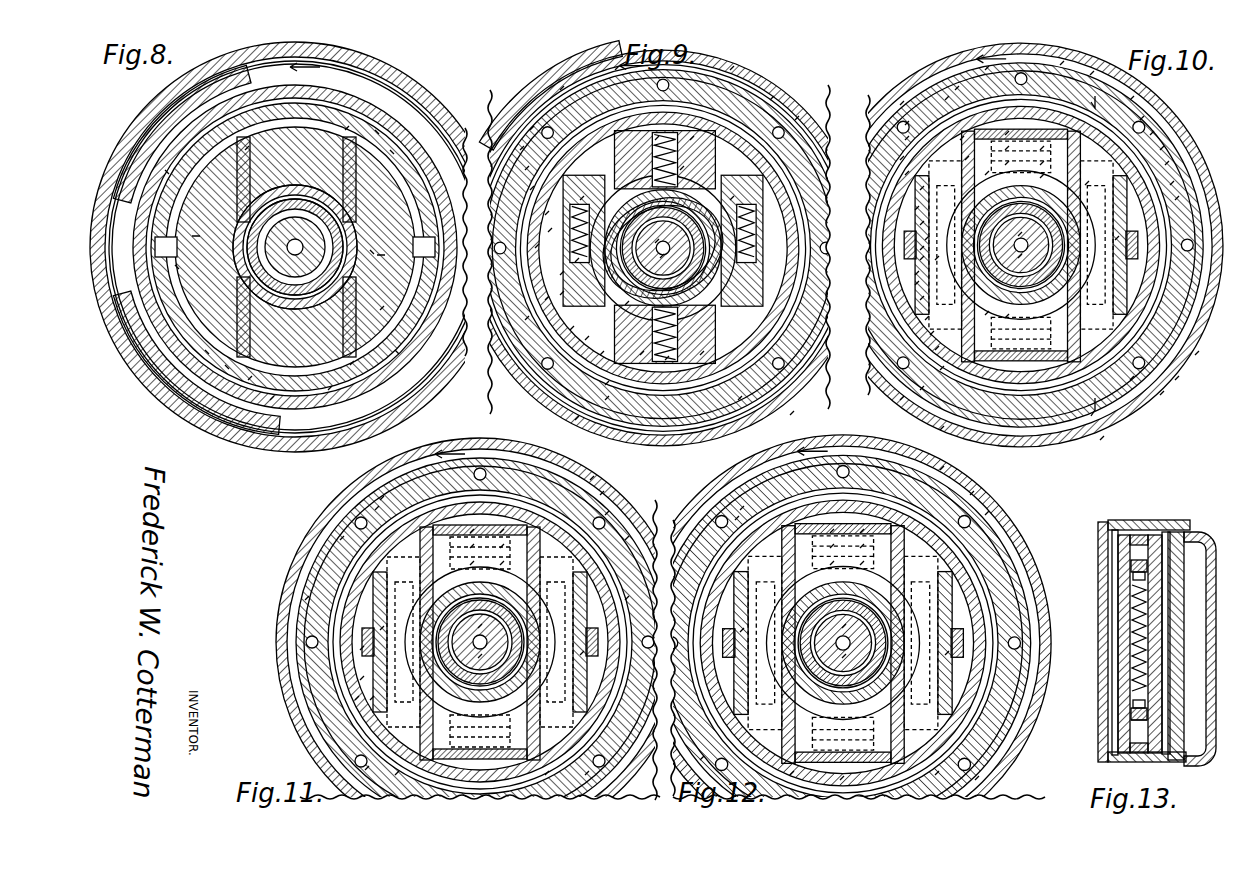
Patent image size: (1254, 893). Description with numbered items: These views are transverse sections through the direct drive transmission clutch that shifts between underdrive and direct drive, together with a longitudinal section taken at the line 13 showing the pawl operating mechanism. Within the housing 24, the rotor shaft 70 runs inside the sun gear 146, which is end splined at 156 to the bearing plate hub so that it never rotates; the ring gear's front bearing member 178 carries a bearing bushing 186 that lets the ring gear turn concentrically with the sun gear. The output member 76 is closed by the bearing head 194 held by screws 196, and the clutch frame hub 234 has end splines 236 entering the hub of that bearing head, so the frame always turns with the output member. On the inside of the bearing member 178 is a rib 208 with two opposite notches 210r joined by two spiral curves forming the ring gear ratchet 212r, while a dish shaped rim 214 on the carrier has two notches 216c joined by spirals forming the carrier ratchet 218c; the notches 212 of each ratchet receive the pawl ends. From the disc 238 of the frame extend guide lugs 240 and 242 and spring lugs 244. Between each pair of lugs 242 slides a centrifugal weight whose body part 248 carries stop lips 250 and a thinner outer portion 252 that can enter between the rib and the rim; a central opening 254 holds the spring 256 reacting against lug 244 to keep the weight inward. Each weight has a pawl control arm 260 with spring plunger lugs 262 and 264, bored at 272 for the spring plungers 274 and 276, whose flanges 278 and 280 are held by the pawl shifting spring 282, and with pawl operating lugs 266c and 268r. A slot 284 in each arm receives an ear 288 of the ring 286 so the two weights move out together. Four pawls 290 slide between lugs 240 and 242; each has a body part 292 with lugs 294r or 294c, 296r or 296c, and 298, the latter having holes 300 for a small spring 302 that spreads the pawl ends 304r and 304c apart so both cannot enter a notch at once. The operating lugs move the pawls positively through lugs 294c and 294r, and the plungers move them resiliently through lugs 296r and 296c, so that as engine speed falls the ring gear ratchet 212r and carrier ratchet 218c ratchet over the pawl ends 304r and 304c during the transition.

In FIG. 10, the section line 13 is at (1102, 254).
In FIG. 8, the housing 24 is at (295, 247).
In FIG. 9, the housing 24 is at (560, 90).
In FIG. 10, the housing 24 is at (985, 70).
In FIG. 8, the rotor shaft 70 is at (295, 247).
In FIG. 9, the rotor shaft 70 is at (664, 234).
In FIG. 10, the output member 76 is at (1090, 75).
In FIG. 10, the sun gear 146 is at (1031, 227).
In FIG. 8, the end splines 156 is at (295, 247).
In FIG. 8, the front bearing member 178 is at (270, 400).
In FIG. 9, the front bearing member 178 is at (730, 70).
In FIG. 10, the front bearing member 178 is at (1130, 100).
In FIG. 13, the front bearing member 178 is at (1103, 522).
In FIG. 8, the bearing bushing 186 is at (250, 165).
In FIG. 8, the bearing head 194 is at (295, 247).
In FIG. 9, the bearing head 194 is at (615, 70).
In FIG. 9, the screws 196 is at (530, 130).
In FIG. 10, the screws 196 is at (1060, 65).
In FIG. 8, the rib 208 is at (328, 390).
In FIG. 9, the rib 208 is at (555, 95).
In FIG. 8, the notches 210r is at (375, 130).
In FIG. 9, the notches 210r is at (770, 100).
In FIG. 10, the notches 210r is at (1140, 120).
In FIG. 11, the notches 210r is at (600, 495).
In FIG. 12, the notches 210r is at (985, 515).
In FIG. 13, the notches 210r is at (1115, 540).
In FIG. 8, the slot 212 is at (200, 236).
In FIG. 9, the ring gear ratchet 212r is at (535, 248).
In FIG. 10, the ring gear ratchet 212r is at (905, 140).
In FIG. 11, the ring gear ratchet 212r is at (340, 540).
In FIG. 12, the ring gear ratchet 212r is at (700, 760).
In FIG. 10, the dish shaped rim 214 is at (955, 90).
In FIG. 13, the dish shaped rim 214 is at (1176, 745).
In FIG. 10, the notches 216c is at (960, 140).
In FIG. 11, the notches 216c is at (375, 510).
In FIG. 12, the notches 216c is at (740, 510).
In FIG. 13, the notches 216c is at (1190, 758).
In FIG. 10, the carrier ratchet 218c is at (1160, 150).
In FIG. 11, the carrier ratchet 218c is at (370, 700).
In FIG. 10, the hub 234 is at (1030, 262).
In FIG. 8, the end splines 236 is at (335, 170).
In FIG. 13, the disc 238 is at (1168, 550).
In FIG. 8, the guide lugs 240 is at (290, 247).
In FIG. 9, the guide lugs 240 is at (525, 320).
In FIG. 10, the guide lugs 240 is at (915, 210).
In FIG. 8, the guide lugs 242 is at (245, 150).
In FIG. 9, the guide lugs 242 is at (795, 120).
In FIG. 10, the guide lugs 242 is at (997, 146).
In FIG. 11, the guide lugs 242 is at (590, 480).
In FIG. 9, the spring lugs 244 is at (655, 140).
In FIG. 10, the spring lugs 244 is at (997, 132).
In FIG. 8, the body part 248 is at (283, 330).
In FIG. 9, the body part 248 is at (640, 355).
In FIG. 8, the lips 250 is at (318, 330).
In FIG. 9, the lips 250 is at (700, 355).
In FIG. 11, the lips 250 is at (488, 620).
In FIG. 10, the thinner outer part 252 is at (1055, 146).
In FIG. 9, the central opening 254 is at (690, 140).
In FIG. 10, the central opening 254 is at (1055, 160).
In FIG. 12, the central opening 254 is at (850, 620).
In FIG. 9, the spring 256 is at (665, 360).
In FIG. 10, the spring 256 is at (997, 160).
In FIG. 11, the spring 256 is at (486, 661).
In FIG. 12, the spring 256 is at (848, 661).
In FIG. 10, the pawl control arm 260 is at (920, 260).
In FIG. 9, the spring plunger lug 262 is at (560, 295).
In FIG. 13, the spring plunger lug 262 is at (1145, 576).
In FIG. 9, the spring plunger lug 264 is at (545, 215).
In FIG. 13, the spring plunger lug 264 is at (1147, 714).
In FIG. 9, the pawl operating lug 266c is at (680, 170).
In FIG. 10, the pawl operating lug 266c is at (1051, 246).
In FIG. 11, the pawl operating lug 266c is at (491, 643).
In FIG. 12, the pawl operating lug 266c is at (852, 643).
In FIG. 9, the pawl operating lug 268r is at (580, 200).
In FIG. 10, the pawl operating lug 268r is at (935, 350).
In FIG. 11, the pawl operating lug 268r is at (491, 643).
In FIG. 12, the pawl operating lug 268r is at (852, 643).
In FIG. 8, the bore 272 is at (380, 310).
In FIG. 10, the spring plunger 274 is at (1175, 200).
In FIG. 11, the spring plunger 274 is at (355, 700).
In FIG. 13, the spring plunger 274 is at (1147, 566).
In FIG. 9, the spring plunger 276 is at (530, 190).
In FIG. 10, the spring plunger 276 is at (925, 320).
In FIG. 11, the spring plunger 276 is at (305, 600).
In FIG. 13, the spring plunger 276 is at (1147, 720).
In FIG. 10, the flange 278 is at (920, 225).
In FIG. 10, the flange 280 is at (920, 300).
In FIG. 10, the pawl shifting spring 282 is at (925, 240).
In FIG. 11, the pawl shifting spring 282 is at (488, 639).
In FIG. 12, the pawl shifting spring 282 is at (730, 624).
In FIG. 13, the pawl shifting spring 282 is at (1145, 704).
In FIG. 9, the slot 284 is at (575, 262).
In FIG. 9, the ring 286 is at (625, 305).
In FIG. 10, the ring 286 is at (1055, 175).
In FIG. 9, the ears 288 is at (662, 261).
In FIG. 9, the pawls 290 is at (790, 415).
In FIG. 8, the body part 292 is at (165, 170).
In FIG. 13, the body part 292 is at (1130, 650).
In FIG. 9, the pawl lug 294r is at (520, 150).
In FIG. 10, the pawl lug 294r is at (900, 105).
In FIG. 11, the pawl lug 294r is at (491, 643).
In FIG. 12, the pawl lug 294r is at (852, 643).
In FIG. 13, the pawl lug 294r is at (1144, 747).
In FIG. 9, the pawl lug 294c is at (730, 200).
In FIG. 10, the pawl lug 294c is at (1165, 165).
In FIG. 11, the pawl lug 294c is at (491, 643).
In FIG. 12, the pawl lug 294c is at (852, 643).
In FIG. 13, the pawl lug 294c is at (1138, 545).
In FIG. 9, the pawl lug 296r is at (570, 330).
In FIG. 10, the pawl lug 296r is at (1170, 185).
In FIG. 11, the pawl lug 296r is at (491, 643).
In FIG. 12, the pawl lug 296r is at (852, 643).
In FIG. 13, the pawl lug 296r is at (1124, 600).
In FIG. 9, the pawl lug 296c is at (525, 170).
In FIG. 10, the pawl lug 296c is at (905, 125).
In FIG. 11, the pawl lug 296c is at (491, 643).
In FIG. 12, the pawl lug 296c is at (852, 643).
In FIG. 13, the pawl lug 296c is at (1124, 700).
In FIG. 8, the pawl lug 298 is at (370, 250).
In FIG. 9, the pawl lug 298 is at (545, 300).
In FIG. 10, the pawl lug 298 is at (920, 250).
In FIG. 11, the pawl lug 298 is at (360, 680).
In FIG. 9, the holes 300 is at (548, 232).
In FIG. 9, the small spring 302 is at (560, 275).
In FIG. 10, the small spring 302 is at (1115, 240).
In FIG. 11, the small spring 302 is at (360, 650).
In FIG. 12, the small spring 302 is at (958, 661).
In FIG. 8, the ring gear pawl end 304r is at (390, 150).
In FIG. 9, the ring gear pawl end 304r is at (605, 385).
In FIG. 10, the ring gear pawl end 304r is at (1150, 135).
In FIG. 11, the ring gear pawl end 304r is at (605, 515).
In FIG. 12, the ring gear pawl end 304r is at (970, 495).
In FIG. 13, the ring gear pawl end 304r is at (1150, 520).
In FIG. 10, the carrier pawl end 304c is at (945, 100).
In FIG. 11, the carrier pawl end 304c is at (380, 500).
In FIG. 12, the carrier pawl end 304c is at (735, 520).
In FIG. 13, the carrier pawl end 304c is at (1150, 760).